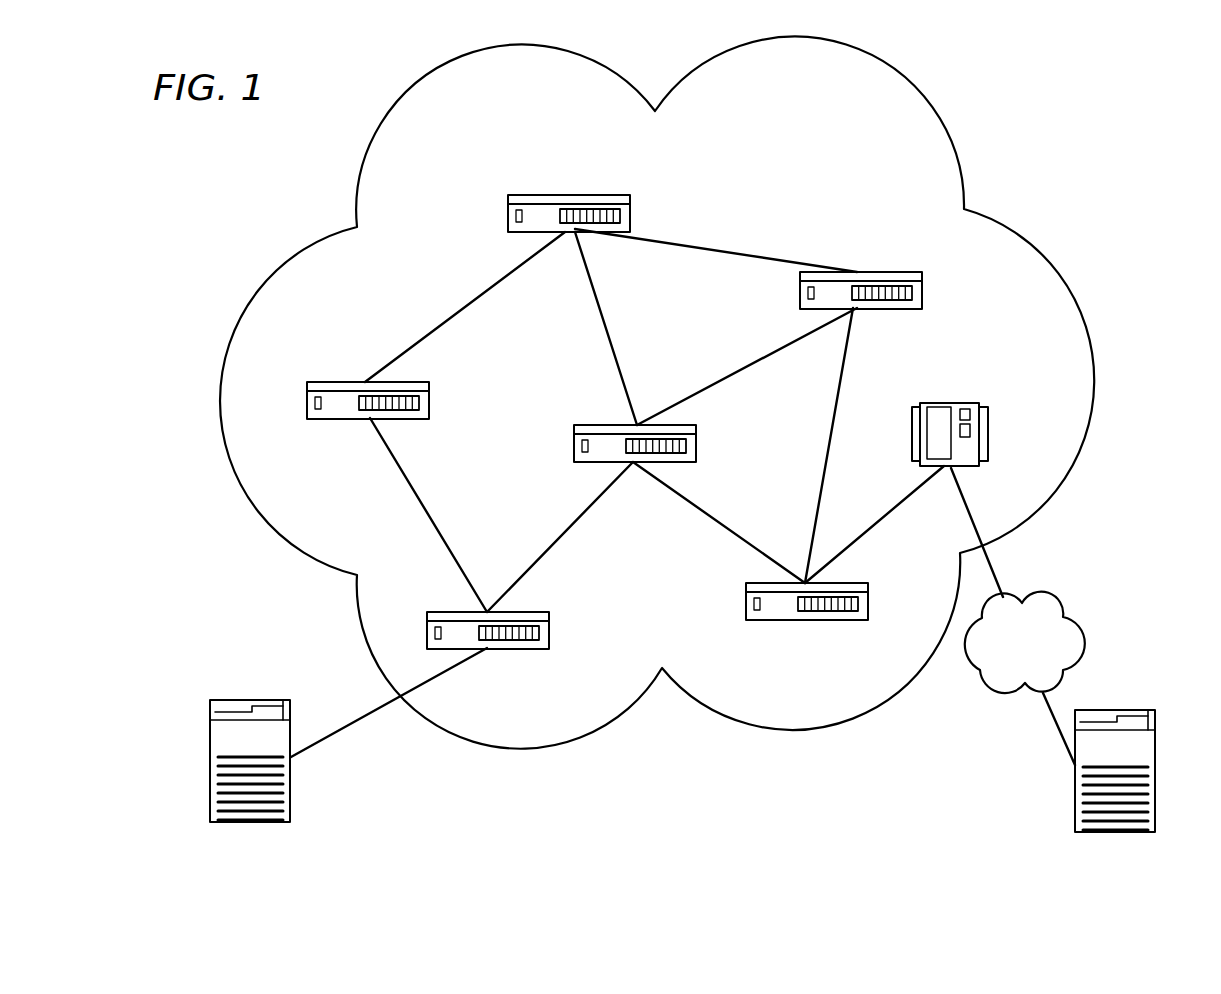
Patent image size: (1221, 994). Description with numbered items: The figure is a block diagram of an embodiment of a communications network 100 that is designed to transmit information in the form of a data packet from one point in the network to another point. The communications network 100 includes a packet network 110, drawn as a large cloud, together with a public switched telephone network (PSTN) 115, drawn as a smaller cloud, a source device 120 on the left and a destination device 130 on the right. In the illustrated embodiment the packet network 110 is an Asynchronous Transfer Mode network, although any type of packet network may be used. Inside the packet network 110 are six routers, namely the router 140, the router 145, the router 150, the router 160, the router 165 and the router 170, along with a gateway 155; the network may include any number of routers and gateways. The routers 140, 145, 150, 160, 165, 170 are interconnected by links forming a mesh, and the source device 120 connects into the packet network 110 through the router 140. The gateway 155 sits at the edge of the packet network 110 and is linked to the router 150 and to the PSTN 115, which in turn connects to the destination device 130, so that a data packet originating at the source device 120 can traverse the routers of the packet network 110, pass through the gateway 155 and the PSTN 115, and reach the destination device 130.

The communications network 100 is at (1081, 108).
The packet network 110 is at (866, 61).
The public switched telephone network (PSTN) 115 is at (1062, 600).
The source device 120 is at (235, 700).
The destination device 130 is at (1140, 710).
The router 140 is at (548, 623).
The router 145 is at (574, 440).
The router 150 is at (800, 619).
The gateway 155 is at (962, 404).
The router 160 is at (340, 382).
The router 165 is at (552, 196).
The router 170 is at (891, 272).